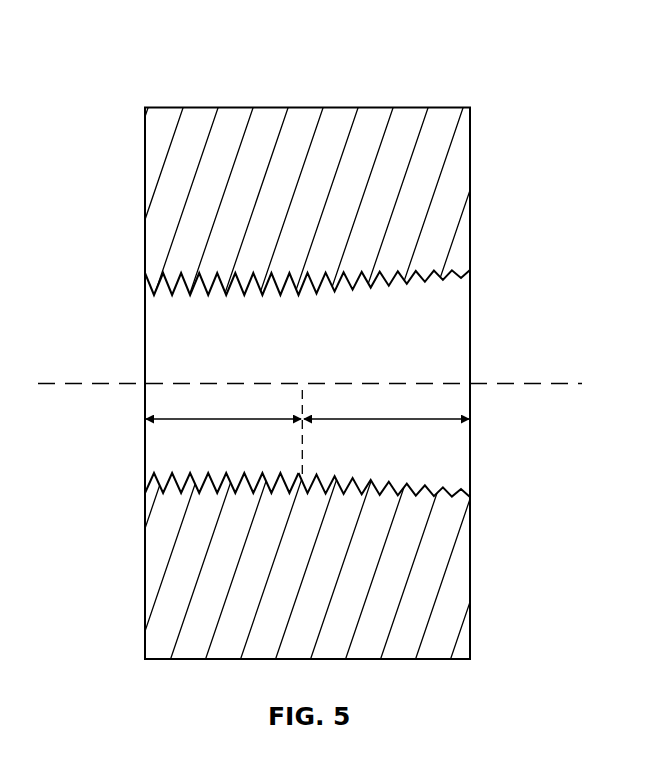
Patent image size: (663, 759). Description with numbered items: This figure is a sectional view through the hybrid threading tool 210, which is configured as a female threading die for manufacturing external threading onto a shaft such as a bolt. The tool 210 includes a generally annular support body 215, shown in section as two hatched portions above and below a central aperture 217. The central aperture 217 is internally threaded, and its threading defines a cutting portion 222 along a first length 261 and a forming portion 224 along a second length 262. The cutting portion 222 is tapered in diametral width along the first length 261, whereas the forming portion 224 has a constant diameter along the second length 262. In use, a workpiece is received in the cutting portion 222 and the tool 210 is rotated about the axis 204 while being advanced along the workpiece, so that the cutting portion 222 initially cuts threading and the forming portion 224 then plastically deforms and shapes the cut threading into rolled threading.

The hybrid threading tool 210 is at (130, 62).
The support body 215 is at (457, 170).
The central aperture 217 is at (430, 315).
The axis 204 is at (515, 383).
The cutting portion 222 is at (416, 470).
The forming portion 224 is at (192, 468).
The first length 261 is at (365, 419).
The second length 262 is at (213, 419).